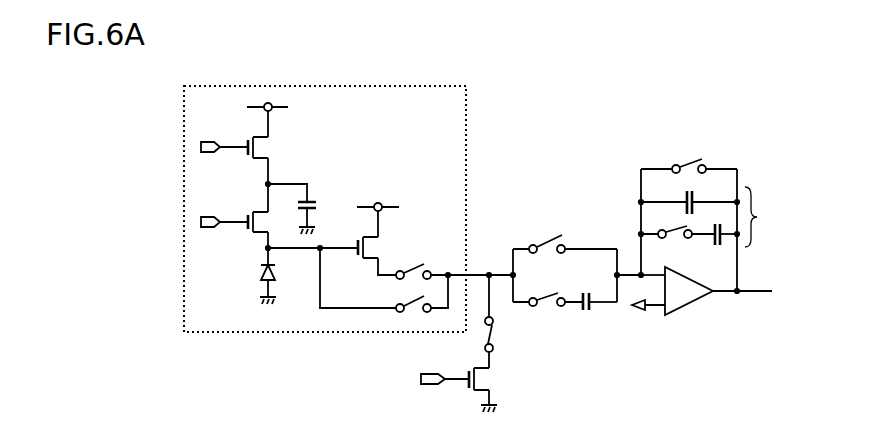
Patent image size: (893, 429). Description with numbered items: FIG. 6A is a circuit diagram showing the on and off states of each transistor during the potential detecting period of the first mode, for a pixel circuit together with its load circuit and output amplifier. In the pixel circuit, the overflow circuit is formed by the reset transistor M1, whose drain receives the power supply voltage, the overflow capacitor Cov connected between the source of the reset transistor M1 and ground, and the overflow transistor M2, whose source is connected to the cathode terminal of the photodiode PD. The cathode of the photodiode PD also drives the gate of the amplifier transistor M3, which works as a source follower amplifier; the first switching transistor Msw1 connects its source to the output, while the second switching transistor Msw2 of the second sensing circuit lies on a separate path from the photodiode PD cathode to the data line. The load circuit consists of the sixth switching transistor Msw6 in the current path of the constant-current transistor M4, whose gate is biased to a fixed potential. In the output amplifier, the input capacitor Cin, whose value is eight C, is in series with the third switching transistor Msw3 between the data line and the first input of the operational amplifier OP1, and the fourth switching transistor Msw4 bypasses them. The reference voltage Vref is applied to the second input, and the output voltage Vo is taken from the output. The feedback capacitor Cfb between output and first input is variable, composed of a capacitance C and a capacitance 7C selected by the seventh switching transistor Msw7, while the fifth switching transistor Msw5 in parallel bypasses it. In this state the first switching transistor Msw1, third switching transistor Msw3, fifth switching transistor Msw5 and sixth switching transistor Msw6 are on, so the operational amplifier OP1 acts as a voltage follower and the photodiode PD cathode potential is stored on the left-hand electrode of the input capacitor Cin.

The reset transistor M1 is at (244, 147).
The overflow transistor M2 is at (244, 222).
The amplifier transistor M3 is at (377, 247).
The constant-current transistor M4 is at (465, 390).
The overflow capacitor Cov is at (306, 209).
The photodiode PD is at (259, 284).
The first switching transistor Msw1 is at (411, 268).
The second switching transistor Msw2 is at (404, 293).
The third switching transistor Msw3 is at (548, 292).
The fourth switching transistor Msw4 is at (544, 240).
The fifth switching transistor Msw5 is at (690, 163).
The sixth switching transistor Msw6 is at (497, 334).
The seventh switching transistor Msw7 is at (677, 239).
The input capacitor Cin is at (591, 319).
The feedback capacitor element of capacitance C is at (689, 199).
The feedback capacitor element of capacitance 7C is at (722, 227).
The feedback capacitor Cfb is at (765, 217).
The operational amplifier OP1 is at (688, 303).
The reference voltage Vref is at (645, 315).
The output voltage Vo is at (752, 292).